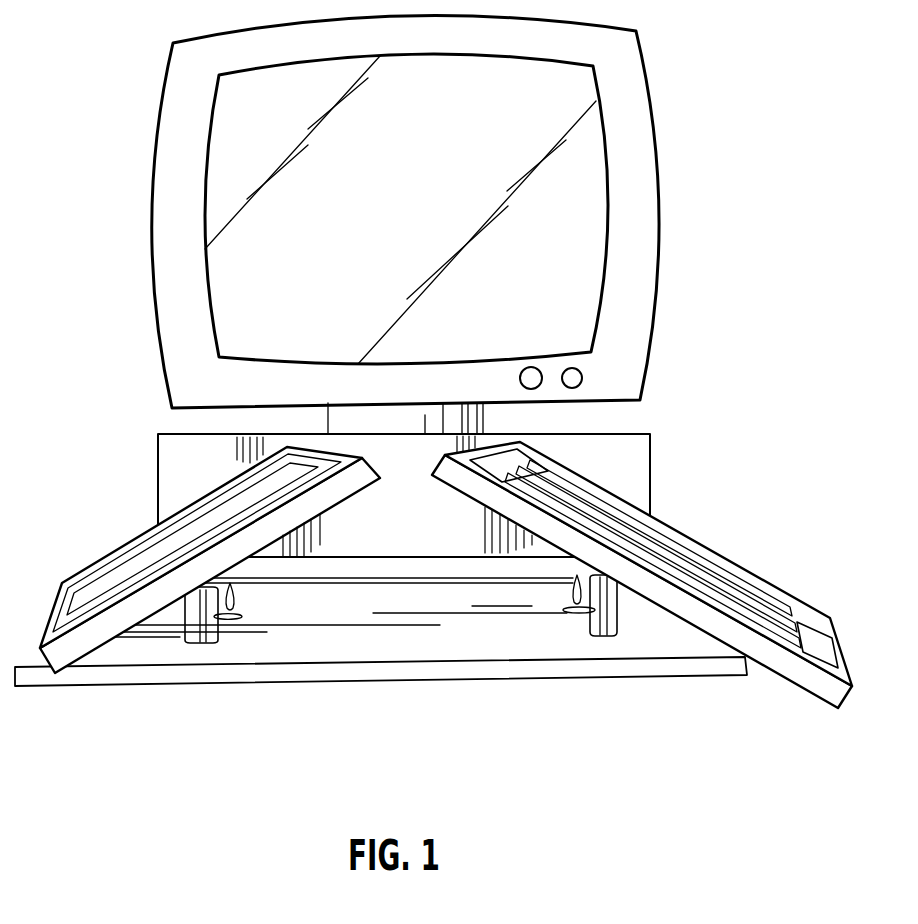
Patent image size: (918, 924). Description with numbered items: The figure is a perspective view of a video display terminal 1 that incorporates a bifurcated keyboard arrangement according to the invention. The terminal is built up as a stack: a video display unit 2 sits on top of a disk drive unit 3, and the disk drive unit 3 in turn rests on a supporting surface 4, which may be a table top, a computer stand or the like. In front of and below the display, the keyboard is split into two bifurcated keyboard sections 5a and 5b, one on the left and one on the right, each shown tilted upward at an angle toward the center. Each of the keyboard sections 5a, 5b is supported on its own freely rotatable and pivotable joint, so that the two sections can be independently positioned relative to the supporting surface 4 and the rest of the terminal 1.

The video display terminal 1 is at (668, 409).
The video display unit 2 is at (659, 188).
The disk drive unit 3 is at (650, 473).
The supporting surface 4 is at (205, 672).
The bifurcated keyboard section 5a is at (693, 538).
The bifurcated keyboard section 5b is at (127, 540).